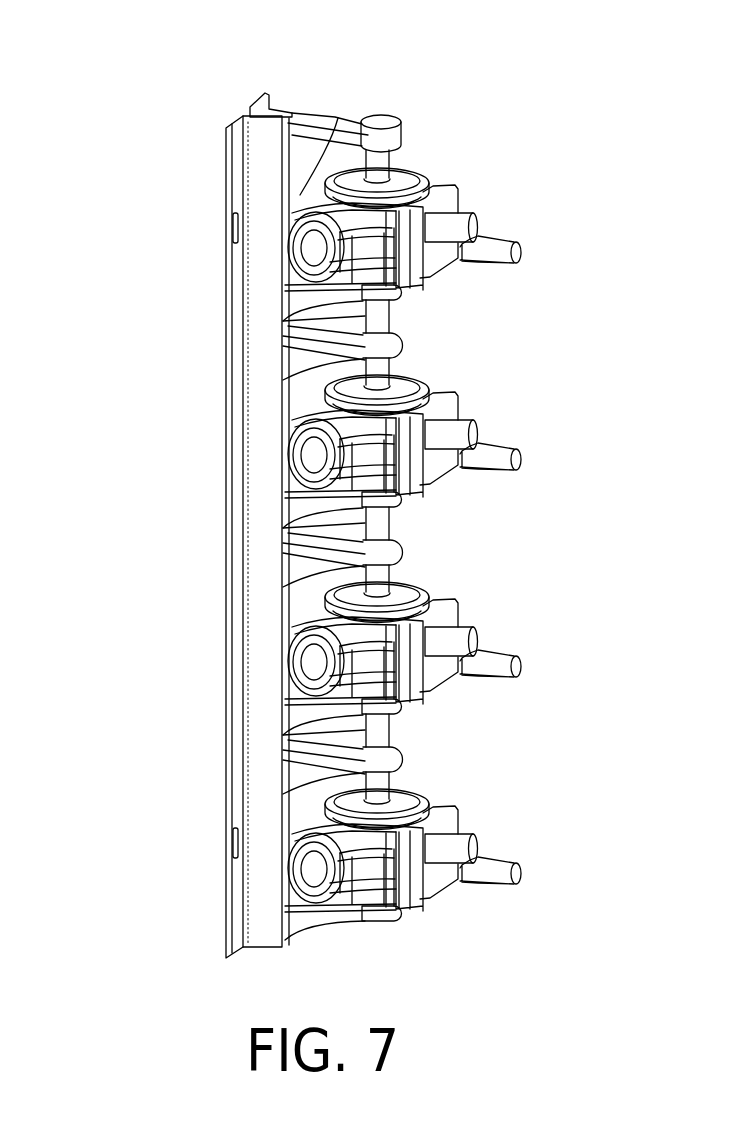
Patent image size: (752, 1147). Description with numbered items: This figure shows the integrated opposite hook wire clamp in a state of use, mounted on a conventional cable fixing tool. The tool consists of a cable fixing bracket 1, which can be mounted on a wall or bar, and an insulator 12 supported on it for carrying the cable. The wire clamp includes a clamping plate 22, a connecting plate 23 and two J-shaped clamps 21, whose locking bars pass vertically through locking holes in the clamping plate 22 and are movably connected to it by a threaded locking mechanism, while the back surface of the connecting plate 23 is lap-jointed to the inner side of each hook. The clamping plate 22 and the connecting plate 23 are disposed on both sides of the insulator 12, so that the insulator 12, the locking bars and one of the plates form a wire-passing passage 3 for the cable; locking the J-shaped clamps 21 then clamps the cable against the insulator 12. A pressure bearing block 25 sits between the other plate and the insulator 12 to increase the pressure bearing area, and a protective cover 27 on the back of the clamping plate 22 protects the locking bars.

The cable fixing bracket 1 is at (240, 500).
The wire-passing passage 3 is at (338, 118).
The insulator 12 is at (310, 300).
The J-shaped clamp 21 is at (312, 214).
The clamping plate 22 is at (430, 207).
The connecting plate 23 is at (290, 254).
The pressure bearing block 25 is at (408, 284).
The protective cover 27 is at (450, 211).